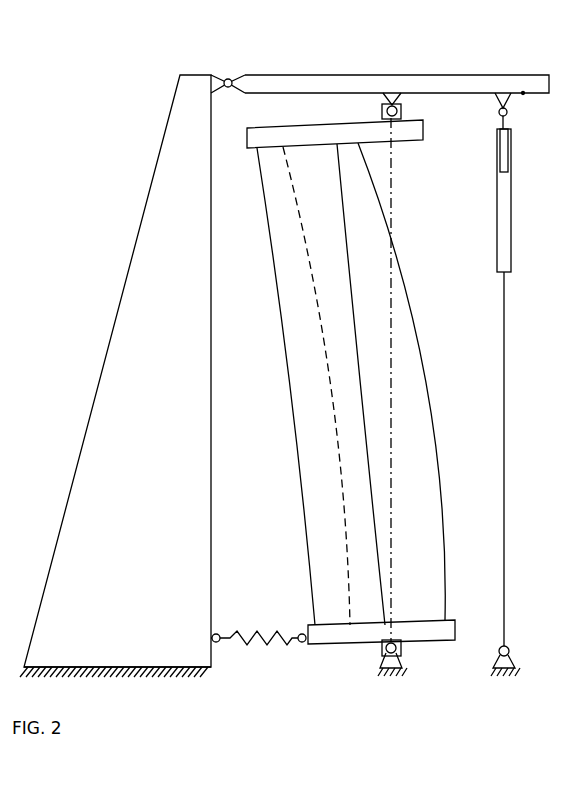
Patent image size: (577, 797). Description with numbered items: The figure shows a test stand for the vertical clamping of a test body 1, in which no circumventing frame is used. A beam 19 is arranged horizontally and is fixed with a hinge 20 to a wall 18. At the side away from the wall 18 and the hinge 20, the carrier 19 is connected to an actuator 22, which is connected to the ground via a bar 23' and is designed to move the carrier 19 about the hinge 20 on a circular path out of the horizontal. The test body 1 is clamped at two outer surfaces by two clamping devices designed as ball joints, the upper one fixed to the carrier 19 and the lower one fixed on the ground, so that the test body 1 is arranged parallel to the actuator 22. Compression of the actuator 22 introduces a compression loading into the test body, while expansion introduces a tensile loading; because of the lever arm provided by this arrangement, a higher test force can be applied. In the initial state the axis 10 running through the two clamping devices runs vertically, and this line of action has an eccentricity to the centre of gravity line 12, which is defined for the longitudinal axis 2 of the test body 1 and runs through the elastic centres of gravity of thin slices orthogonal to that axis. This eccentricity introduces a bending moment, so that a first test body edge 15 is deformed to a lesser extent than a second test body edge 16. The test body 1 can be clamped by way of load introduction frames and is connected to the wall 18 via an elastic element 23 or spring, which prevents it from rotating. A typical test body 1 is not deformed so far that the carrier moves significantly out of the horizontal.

The test body 1 is at (355, 380).
The longitudinal axis 2 is at (355, 318).
The axis 10 is at (390, 197).
The centre of gravity line 12 is at (335, 405).
The first test body edge 15 is at (274, 268).
The second test body edge 16 is at (430, 400).
The wall 18 is at (114, 320).
The beam 19 is at (523, 93).
The hinge 20 is at (228, 79).
The actuator 22 is at (510, 212).
The elastic element 23 is at (258, 622).
The bar 23' is at (520, 474).